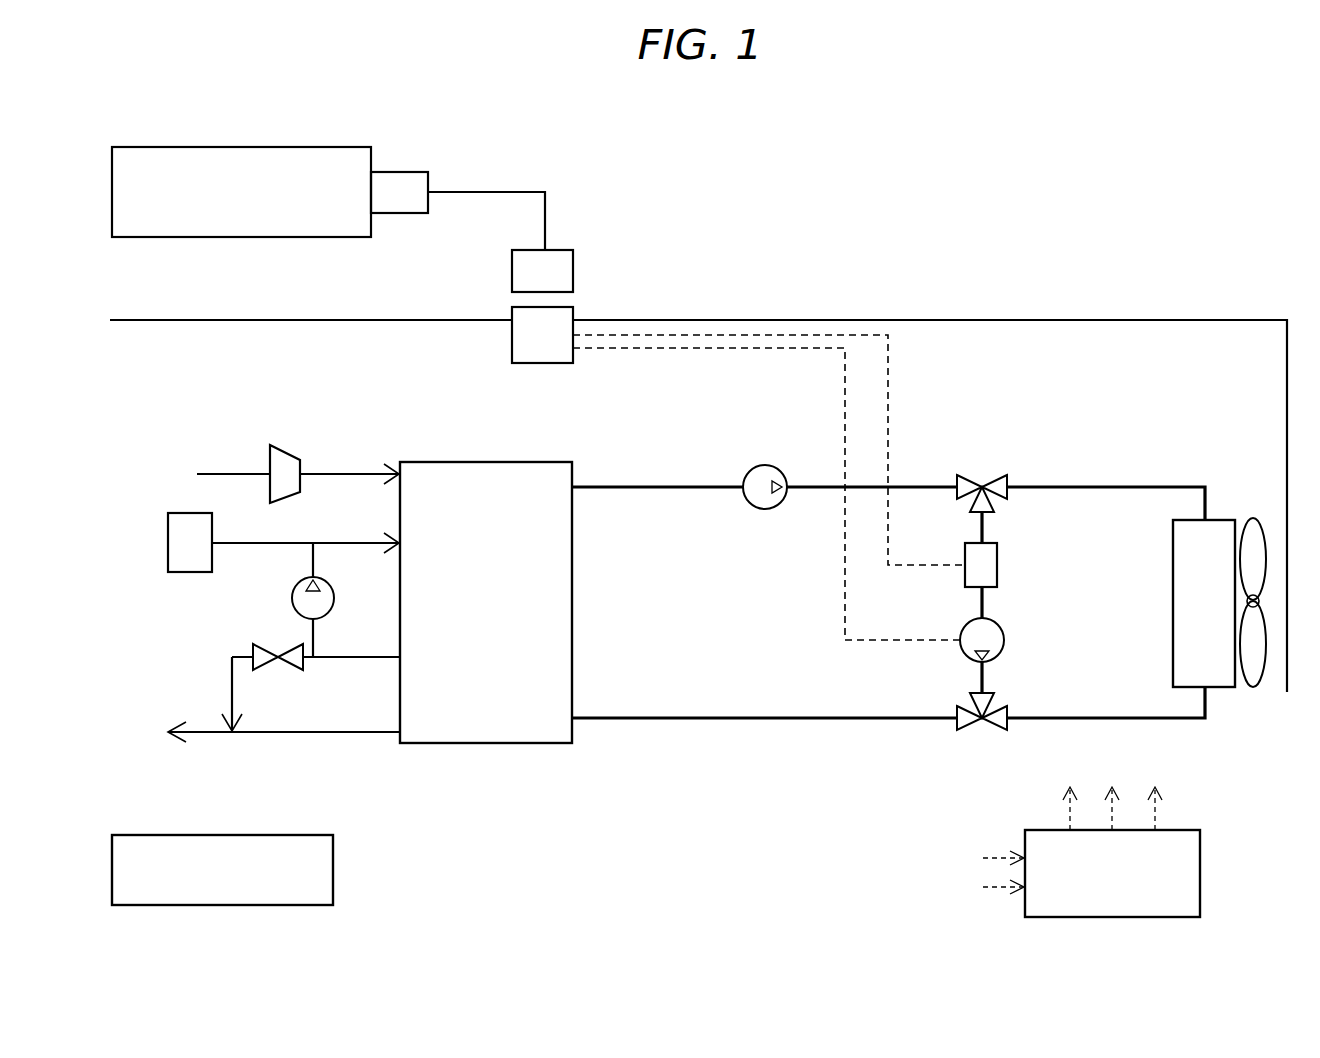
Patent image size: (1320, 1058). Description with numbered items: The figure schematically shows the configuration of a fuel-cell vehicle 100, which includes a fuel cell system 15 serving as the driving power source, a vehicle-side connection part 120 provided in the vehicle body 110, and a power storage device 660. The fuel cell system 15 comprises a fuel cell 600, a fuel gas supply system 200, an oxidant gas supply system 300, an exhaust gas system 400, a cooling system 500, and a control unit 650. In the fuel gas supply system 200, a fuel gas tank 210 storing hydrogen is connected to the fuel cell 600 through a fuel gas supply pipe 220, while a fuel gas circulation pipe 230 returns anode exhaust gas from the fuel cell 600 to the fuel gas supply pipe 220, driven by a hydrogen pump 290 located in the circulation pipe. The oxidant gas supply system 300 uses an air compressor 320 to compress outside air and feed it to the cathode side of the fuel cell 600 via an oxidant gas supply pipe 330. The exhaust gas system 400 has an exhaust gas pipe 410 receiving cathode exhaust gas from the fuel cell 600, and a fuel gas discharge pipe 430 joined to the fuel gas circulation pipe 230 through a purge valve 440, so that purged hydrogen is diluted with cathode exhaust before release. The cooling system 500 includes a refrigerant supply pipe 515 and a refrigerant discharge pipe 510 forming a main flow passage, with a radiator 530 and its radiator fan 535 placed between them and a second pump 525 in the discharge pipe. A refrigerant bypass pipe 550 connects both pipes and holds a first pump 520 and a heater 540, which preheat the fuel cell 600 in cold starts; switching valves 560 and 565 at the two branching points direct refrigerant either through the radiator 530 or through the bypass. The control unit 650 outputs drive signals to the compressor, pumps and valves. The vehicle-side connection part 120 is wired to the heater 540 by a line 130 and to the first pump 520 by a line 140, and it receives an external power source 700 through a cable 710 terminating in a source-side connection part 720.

The fuel cell system 15 is at (643, 773).
The fuel-cell vehicle 100 is at (1160, 283).
The vehicle body 110 is at (992, 320).
The vehicle-side connection part 120 is at (573, 312).
The line 130 is at (890, 393).
The line 140 is at (843, 425).
The fuel gas supply system 200 is at (218, 612).
The fuel gas tank 210 is at (180, 513).
The fuel gas supply pipe 220 is at (341, 540).
The fuel gas circulation pipe 230 is at (383, 660).
The hydrogen pump 290 is at (292, 596).
The oxidant gas supply system 300 is at (250, 405).
The air compressor 320 is at (290, 446).
The oxidant gas supply pipe 330 is at (340, 470).
The exhaust gas system 400 is at (330, 745).
The exhaust gas pipe 410 is at (295, 735).
The fuel gas discharge pipe 430 is at (232, 690).
The purge valve 440 is at (272, 662).
The cooling system 500 is at (1022, 440).
The refrigerant discharge pipe 510 is at (655, 485).
The refrigerant supply pipe 515 is at (660, 716).
The first pump 520 is at (1007, 638).
The second pump 525 is at (762, 510).
The radiator 530 is at (1172, 603).
The radiator fan 535 is at (1262, 683).
The heater 540 is at (999, 563).
The refrigerant bypass pipe 550 is at (985, 522).
The switching valve 560 is at (978, 472).
The switching valve 565 is at (977, 735).
The fuel cell 600 is at (483, 462).
The control unit 650 is at (1200, 872).
The power storage device 660 is at (333, 870).
The external power source 700 is at (240, 147).
The cable 710 is at (508, 190).
The source-side connection part 720 is at (573, 262).